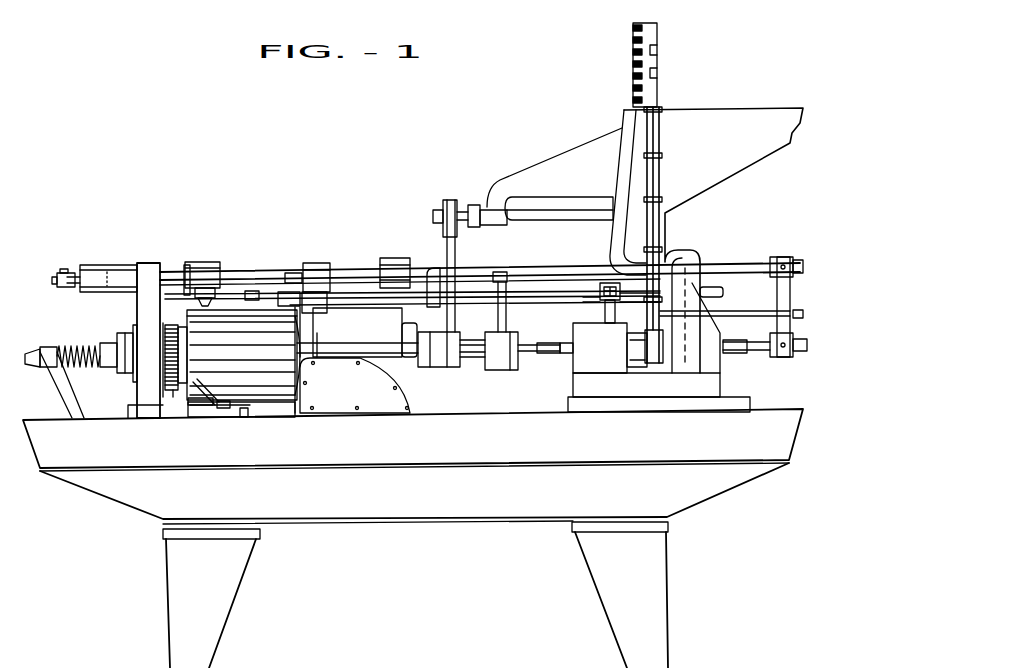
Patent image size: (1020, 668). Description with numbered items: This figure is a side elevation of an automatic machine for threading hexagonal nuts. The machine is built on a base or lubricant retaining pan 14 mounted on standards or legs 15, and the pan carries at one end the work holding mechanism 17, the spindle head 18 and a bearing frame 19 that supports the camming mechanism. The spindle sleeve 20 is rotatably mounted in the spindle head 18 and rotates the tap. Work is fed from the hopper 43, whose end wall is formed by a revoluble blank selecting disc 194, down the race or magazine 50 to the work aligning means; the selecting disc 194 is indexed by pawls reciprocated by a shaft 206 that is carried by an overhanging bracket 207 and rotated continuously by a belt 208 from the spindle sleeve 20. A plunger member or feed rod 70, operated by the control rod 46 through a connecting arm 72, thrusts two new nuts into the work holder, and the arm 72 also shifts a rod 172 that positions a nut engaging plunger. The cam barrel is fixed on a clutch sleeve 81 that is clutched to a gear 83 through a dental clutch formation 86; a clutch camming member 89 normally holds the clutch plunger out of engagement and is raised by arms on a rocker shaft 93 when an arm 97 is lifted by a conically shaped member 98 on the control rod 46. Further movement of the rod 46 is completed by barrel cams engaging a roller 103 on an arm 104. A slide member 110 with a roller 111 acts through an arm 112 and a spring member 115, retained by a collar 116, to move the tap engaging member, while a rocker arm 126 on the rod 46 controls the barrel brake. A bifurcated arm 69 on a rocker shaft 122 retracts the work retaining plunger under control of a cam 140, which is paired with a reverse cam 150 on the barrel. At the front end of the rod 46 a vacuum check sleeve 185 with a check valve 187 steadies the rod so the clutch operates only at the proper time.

The base or lubricant retaining pan 14 is at (413, 466).
The standards or legs 15 is at (415, 595).
The work holding mechanism 17 is at (655, 367).
The spindle head 18 is at (318, 263).
The bearing frame 19 is at (149, 268).
The spindle sleeve 20 is at (433, 355).
The hopper 43 is at (687, 125).
The control rod 46 is at (348, 272).
The race or magazine 50 is at (662, 166).
The bifurcated arm 69 is at (598, 292).
The plunger member or feed rod 70 is at (765, 341).
The connecting arm 72 is at (784, 296).
The clutch sleeve 81 is at (243, 363).
The gear 83 is at (170, 386).
The dental clutch formation 86 is at (193, 373).
The clutch camming member 89 is at (186, 266).
The rocker shaft 93 is at (352, 298).
The arm 97 is at (430, 276).
The conically shaped member 98 is at (437, 300).
The roller 103 is at (213, 302).
The arm 104 is at (208, 262).
The slide member 110 is at (245, 412).
The roller 111 is at (247, 404).
The arm 112 is at (75, 395).
The spring member 115 is at (81, 366).
The collar 116 is at (102, 342).
The rocker shaft 122 is at (552, 300).
The rocker arm 126 is at (290, 273).
The cam 140 is at (255, 291).
The cam 150 is at (207, 406).
The rod 172 is at (760, 305).
The sleeve 185 is at (128, 265).
The check valve 187 is at (62, 271).
The blank selecting disc 194 is at (658, 35).
The shaft 206 is at (547, 221).
The overhanging bracket 207 is at (554, 160).
The belt 208 is at (457, 247).